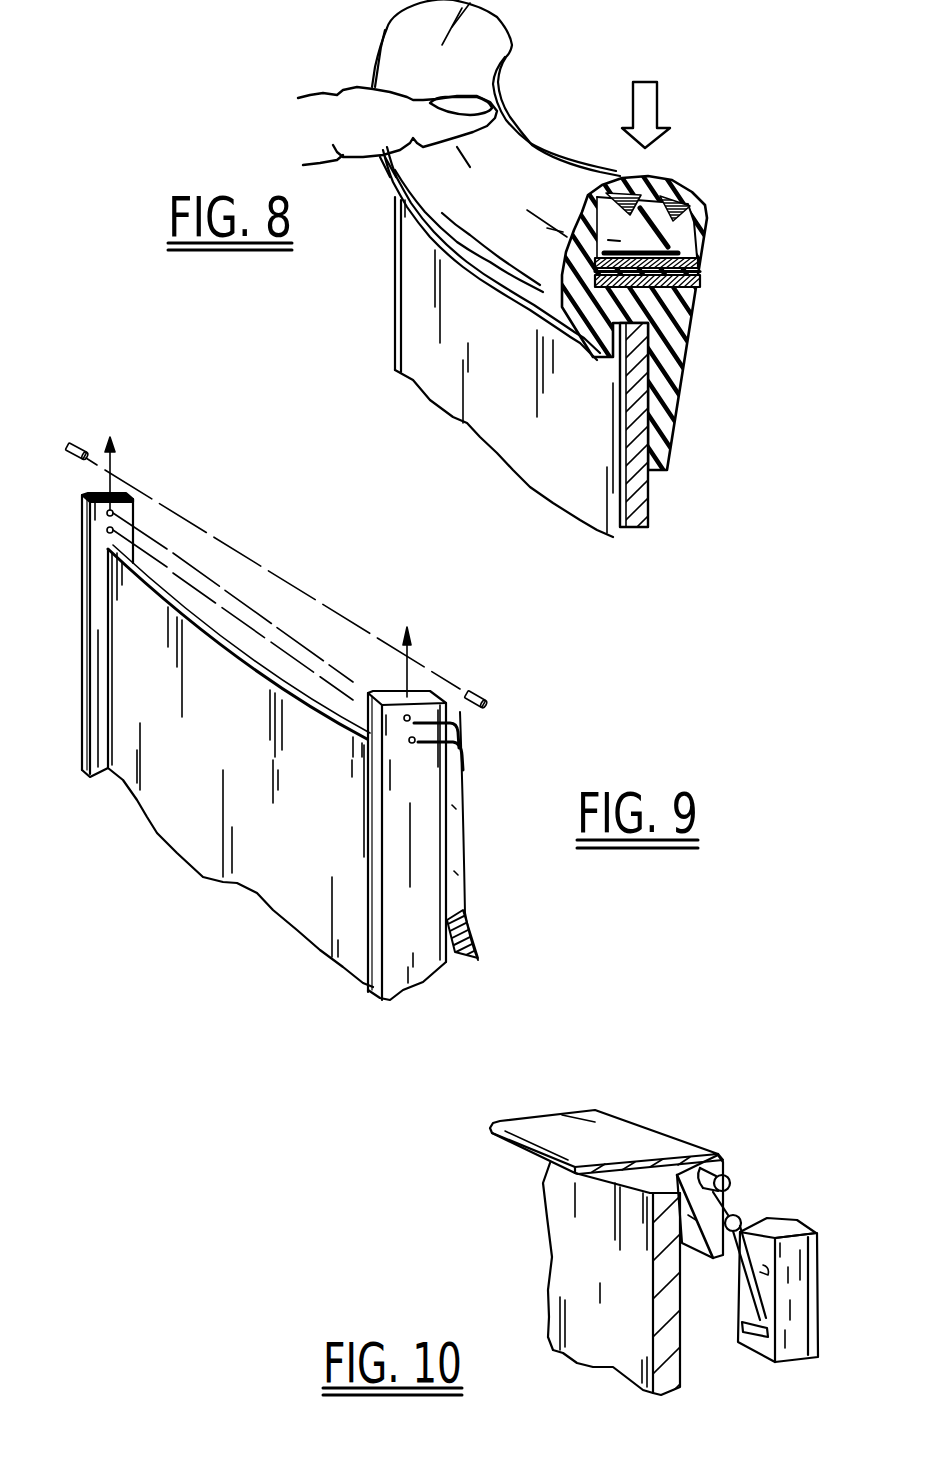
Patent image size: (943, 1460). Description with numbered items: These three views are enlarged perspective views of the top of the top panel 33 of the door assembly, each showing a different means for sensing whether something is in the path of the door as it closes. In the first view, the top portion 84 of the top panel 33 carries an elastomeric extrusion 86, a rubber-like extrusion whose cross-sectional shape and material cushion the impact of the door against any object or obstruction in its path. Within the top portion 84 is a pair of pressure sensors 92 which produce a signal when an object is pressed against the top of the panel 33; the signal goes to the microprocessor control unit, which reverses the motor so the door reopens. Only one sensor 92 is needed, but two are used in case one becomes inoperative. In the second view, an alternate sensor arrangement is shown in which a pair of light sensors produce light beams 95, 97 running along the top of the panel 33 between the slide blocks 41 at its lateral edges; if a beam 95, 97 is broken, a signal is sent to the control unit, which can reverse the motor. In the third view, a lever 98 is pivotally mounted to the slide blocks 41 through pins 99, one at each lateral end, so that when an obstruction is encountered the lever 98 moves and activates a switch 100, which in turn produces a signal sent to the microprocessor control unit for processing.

In FIG. 8, the top panel 33 is at (593, 459).
In FIG. 10, the top panel 33 is at (667, 1357).
In FIG. 9, the slide block 41 is at (82, 677).
In FIG. 8, the top portion 84 is at (634, 407).
In FIG. 8, the elastomeric extrusion 86 is at (517, 136).
In FIG. 8, the pressure sensor 92 is at (700, 261).
In FIG. 9, the light beam 95 is at (333, 665).
In FIG. 9, the light beam 97 is at (260, 637).
In FIG. 10, the lever 98 is at (603, 1122).
In FIG. 10, the pin 99 is at (733, 1177).
In FIG. 10, the switch 100 is at (798, 1223).